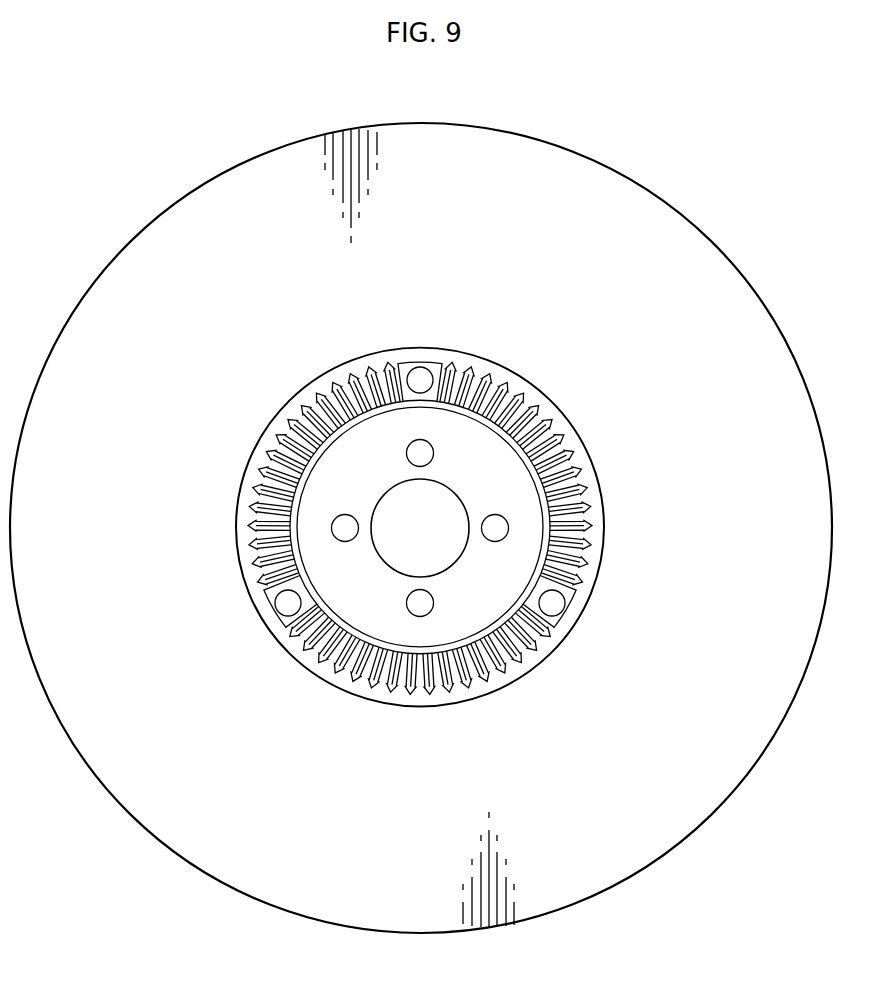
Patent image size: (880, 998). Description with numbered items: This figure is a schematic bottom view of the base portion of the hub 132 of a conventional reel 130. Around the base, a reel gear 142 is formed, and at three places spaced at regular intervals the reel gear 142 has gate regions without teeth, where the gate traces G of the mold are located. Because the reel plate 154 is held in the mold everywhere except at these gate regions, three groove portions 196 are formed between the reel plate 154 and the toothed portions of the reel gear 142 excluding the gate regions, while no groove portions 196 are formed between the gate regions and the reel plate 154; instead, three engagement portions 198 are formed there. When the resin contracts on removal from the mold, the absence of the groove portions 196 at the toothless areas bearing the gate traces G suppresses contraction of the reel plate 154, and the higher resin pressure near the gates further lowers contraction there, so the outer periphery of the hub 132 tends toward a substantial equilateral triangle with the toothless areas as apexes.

The reel 130 is at (713, 160).
The hub 132 is at (556, 409).
The reel gear 142 is at (252, 543).
The reel plate 154 is at (318, 492).
The groove portions 196 is at (302, 447).
The engagement portions 198 is at (418, 393).
The gate traces G is at (418, 378).